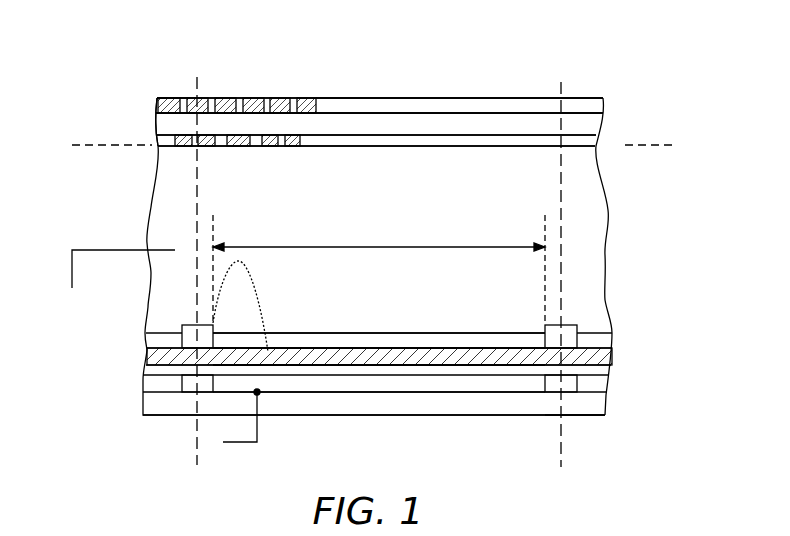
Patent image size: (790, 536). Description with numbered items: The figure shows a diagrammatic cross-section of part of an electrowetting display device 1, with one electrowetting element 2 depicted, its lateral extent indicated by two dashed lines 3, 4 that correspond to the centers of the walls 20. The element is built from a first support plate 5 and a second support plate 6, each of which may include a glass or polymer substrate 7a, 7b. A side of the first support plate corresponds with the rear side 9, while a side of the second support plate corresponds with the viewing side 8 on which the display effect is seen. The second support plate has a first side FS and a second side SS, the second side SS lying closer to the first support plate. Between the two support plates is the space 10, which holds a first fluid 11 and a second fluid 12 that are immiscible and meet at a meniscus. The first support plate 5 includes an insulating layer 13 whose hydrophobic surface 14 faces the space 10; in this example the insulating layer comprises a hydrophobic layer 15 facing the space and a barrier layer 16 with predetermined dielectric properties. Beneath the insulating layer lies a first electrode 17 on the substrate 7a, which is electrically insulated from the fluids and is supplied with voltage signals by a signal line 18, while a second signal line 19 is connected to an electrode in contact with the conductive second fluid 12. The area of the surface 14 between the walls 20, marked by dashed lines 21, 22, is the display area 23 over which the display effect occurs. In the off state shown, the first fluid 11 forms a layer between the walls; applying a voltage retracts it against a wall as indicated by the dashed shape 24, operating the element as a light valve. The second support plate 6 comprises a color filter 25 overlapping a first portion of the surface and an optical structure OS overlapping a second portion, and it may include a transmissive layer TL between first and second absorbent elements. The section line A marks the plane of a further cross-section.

The electrowetting display device 1 is at (657, 73).
The electrowetting element 2 is at (339, 84).
The dashed line 3 is at (197, 82).
The dashed line 4 is at (561, 82).
The first support plate 5 is at (660, 333).
The second support plate 6 is at (619, 98).
The substrate 7a is at (587, 408).
The substrate 7b is at (512, 120).
The viewing side 8 is at (284, 98).
The rear side 9 is at (341, 417).
The space 10 is at (442, 160).
The first fluid 11 is at (497, 340).
The second fluid 12 is at (608, 222).
The insulating layer 13 is at (620, 349).
The surface 14 is at (437, 350).
The hydrophobic layer 15 is at (372, 364).
The barrier layer 16 is at (311, 367).
The first electrode 17 is at (443, 383).
The signal line 18 is at (241, 446).
The second signal line 19 is at (88, 250).
The walls 20 is at (188, 337).
The dashed line 21 is at (213, 221).
The dashed line 22 is at (545, 222).
The display area 23 is at (379, 237).
The dashed shape 24 is at (223, 278).
The color filter 25 is at (318, 148).
The optical structure OS is at (158, 88).
The transmissive layer TL is at (158, 127).
The first side FS is at (392, 97).
The second side SS is at (372, 148).
The section line A is at (369, 145).